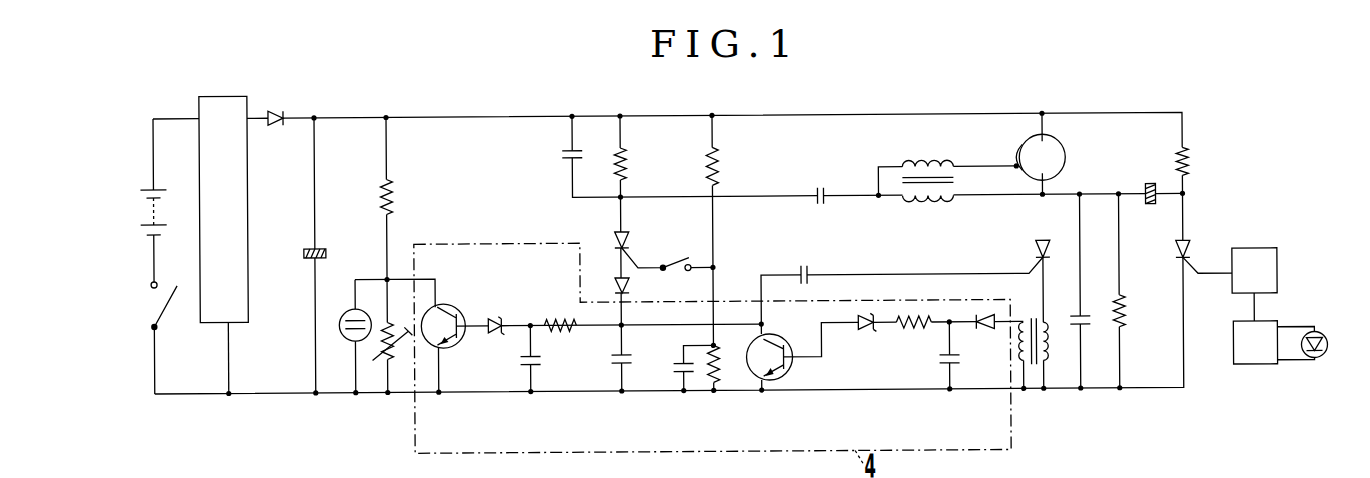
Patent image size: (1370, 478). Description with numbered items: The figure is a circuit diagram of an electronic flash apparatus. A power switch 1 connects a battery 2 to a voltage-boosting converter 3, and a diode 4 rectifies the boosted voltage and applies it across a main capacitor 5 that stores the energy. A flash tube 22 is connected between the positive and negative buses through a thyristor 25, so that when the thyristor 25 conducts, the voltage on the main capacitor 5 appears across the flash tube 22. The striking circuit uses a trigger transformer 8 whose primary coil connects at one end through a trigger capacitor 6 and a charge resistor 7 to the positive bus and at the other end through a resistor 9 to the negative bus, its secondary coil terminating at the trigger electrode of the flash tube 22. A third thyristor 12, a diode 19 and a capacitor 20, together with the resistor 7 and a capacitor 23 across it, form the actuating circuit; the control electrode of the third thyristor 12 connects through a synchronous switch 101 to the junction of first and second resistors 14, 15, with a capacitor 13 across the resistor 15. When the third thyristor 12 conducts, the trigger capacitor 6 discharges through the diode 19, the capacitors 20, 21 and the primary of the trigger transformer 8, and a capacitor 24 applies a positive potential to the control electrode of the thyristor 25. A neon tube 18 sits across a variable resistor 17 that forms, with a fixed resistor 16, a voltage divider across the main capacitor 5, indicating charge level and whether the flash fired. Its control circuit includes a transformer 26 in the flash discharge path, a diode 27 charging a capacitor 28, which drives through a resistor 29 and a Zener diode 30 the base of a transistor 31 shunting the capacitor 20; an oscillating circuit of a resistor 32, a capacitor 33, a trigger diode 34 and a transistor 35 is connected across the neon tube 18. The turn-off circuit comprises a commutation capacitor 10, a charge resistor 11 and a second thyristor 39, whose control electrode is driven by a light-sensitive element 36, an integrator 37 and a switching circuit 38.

The power switch 1 is at (164, 338).
The battery 2 is at (156, 177).
The voltage-boosting converter 3 is at (216, 226).
The diode 4 is at (275, 103).
The main capacitor 5 is at (322, 253).
The trigger capacitor 6 is at (821, 179).
The charge resistor 7 is at (625, 163).
The trigger transformer 8 is at (927, 167).
The resistor 9 is at (1125, 312).
The commutation capacitor 10 is at (1150, 177).
The charge resistor 11 is at (1192, 160).
The third thyristor 12 is at (632, 240).
The capacitor 13 is at (676, 371).
The first resistor 14 is at (721, 164).
The second resistor 15 is at (720, 368).
The fixed resistor 16 is at (396, 197).
The variable resistor 17 is at (387, 359).
The neon tube 18 is at (353, 311).
The diode 19 is at (632, 288).
The capacitor 20 is at (631, 362).
The capacitor 21 is at (1086, 323).
The flash tube 22 is at (1053, 157).
The capacitor 23 is at (562, 150).
The capacitor 24 is at (806, 258).
The thyristor 25 is at (1028, 248).
The transformer 26 is at (1030, 371).
The diode 27 is at (987, 338).
The capacitor 28 is at (962, 362).
The resistor 29 is at (913, 338).
The Zener diode 30 is at (865, 337).
The transistor 31 is at (771, 339).
The resistor 32 is at (560, 309).
The capacitor 33 is at (541, 362).
The trigger diode 34 is at (495, 306).
The transistor 35 is at (443, 309).
The light-sensitive element 36 is at (1316, 366).
The integrator 37 is at (1303, 334).
The switching circuit 38 is at (1245, 296).
The second thyristor 39 is at (1170, 248).
The synchronous switch 101 is at (690, 266).